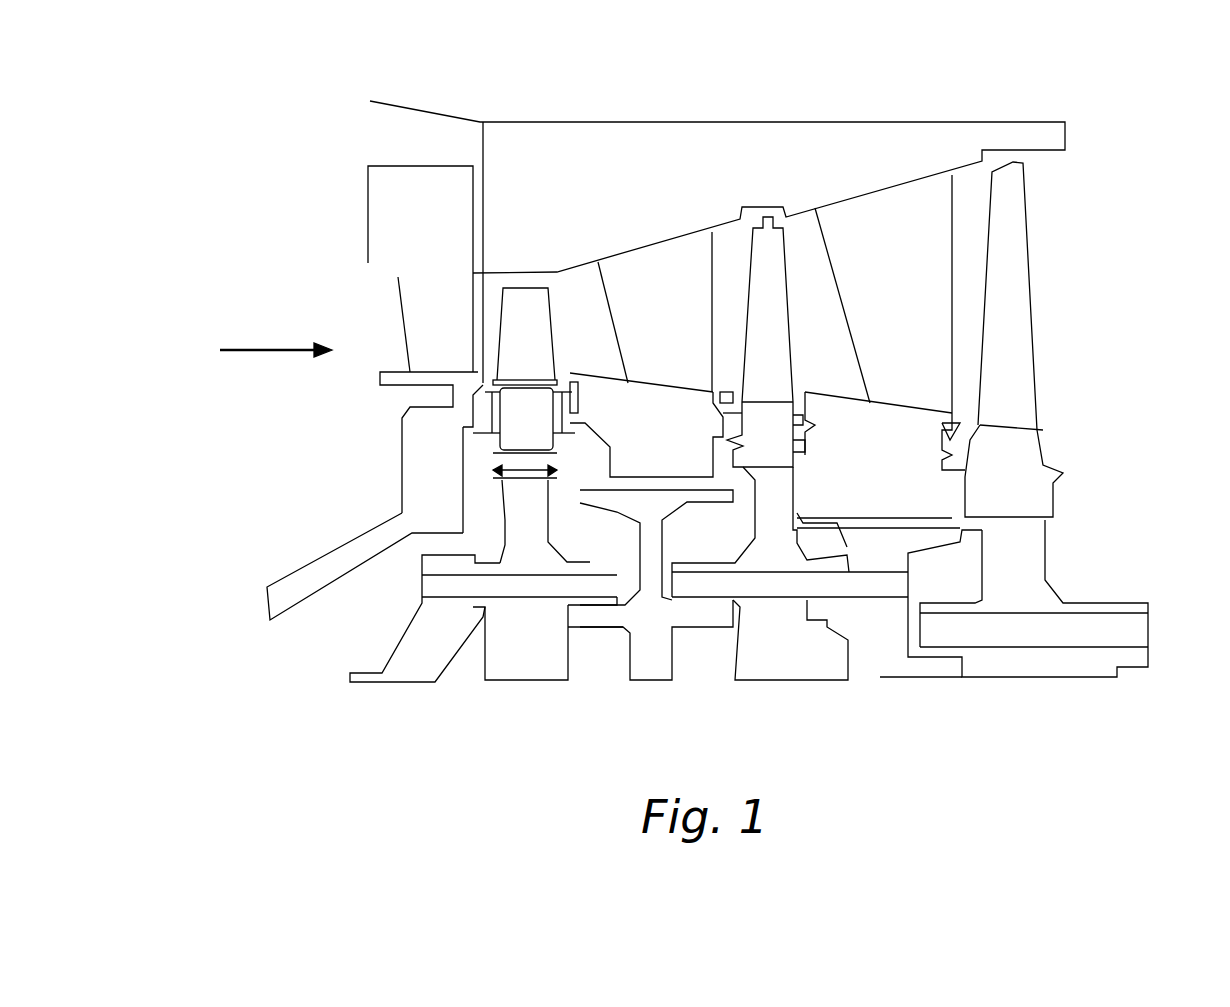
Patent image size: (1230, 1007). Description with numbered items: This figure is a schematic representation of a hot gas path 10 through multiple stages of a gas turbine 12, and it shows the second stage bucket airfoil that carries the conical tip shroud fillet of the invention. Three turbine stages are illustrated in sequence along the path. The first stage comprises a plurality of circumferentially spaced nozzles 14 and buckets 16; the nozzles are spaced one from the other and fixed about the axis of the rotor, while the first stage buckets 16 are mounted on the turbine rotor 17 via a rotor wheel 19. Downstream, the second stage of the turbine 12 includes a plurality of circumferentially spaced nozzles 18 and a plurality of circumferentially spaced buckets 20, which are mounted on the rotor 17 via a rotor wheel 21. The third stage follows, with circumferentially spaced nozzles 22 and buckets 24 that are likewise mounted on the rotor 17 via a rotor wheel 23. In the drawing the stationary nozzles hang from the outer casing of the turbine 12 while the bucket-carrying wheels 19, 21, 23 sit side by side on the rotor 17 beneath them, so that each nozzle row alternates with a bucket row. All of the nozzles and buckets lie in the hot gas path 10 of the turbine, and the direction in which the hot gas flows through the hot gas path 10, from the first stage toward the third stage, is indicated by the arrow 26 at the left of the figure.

The hot gas path 10 is at (730, 238).
The gas turbine 12 is at (832, 145).
The nozzles 14 is at (422, 323).
The buckets 16 is at (553, 337).
The turbine rotor 17 is at (529, 617).
The nozzles 18 is at (672, 318).
The rotor wheel 19 is at (525, 520).
The buckets 20 is at (778, 318).
The rotor wheel 21 is at (775, 525).
The nozzles 22 is at (906, 307).
The rotor wheel 23 is at (1017, 543).
The buckets 24 is at (1017, 305).
The arrow 26 is at (248, 335).